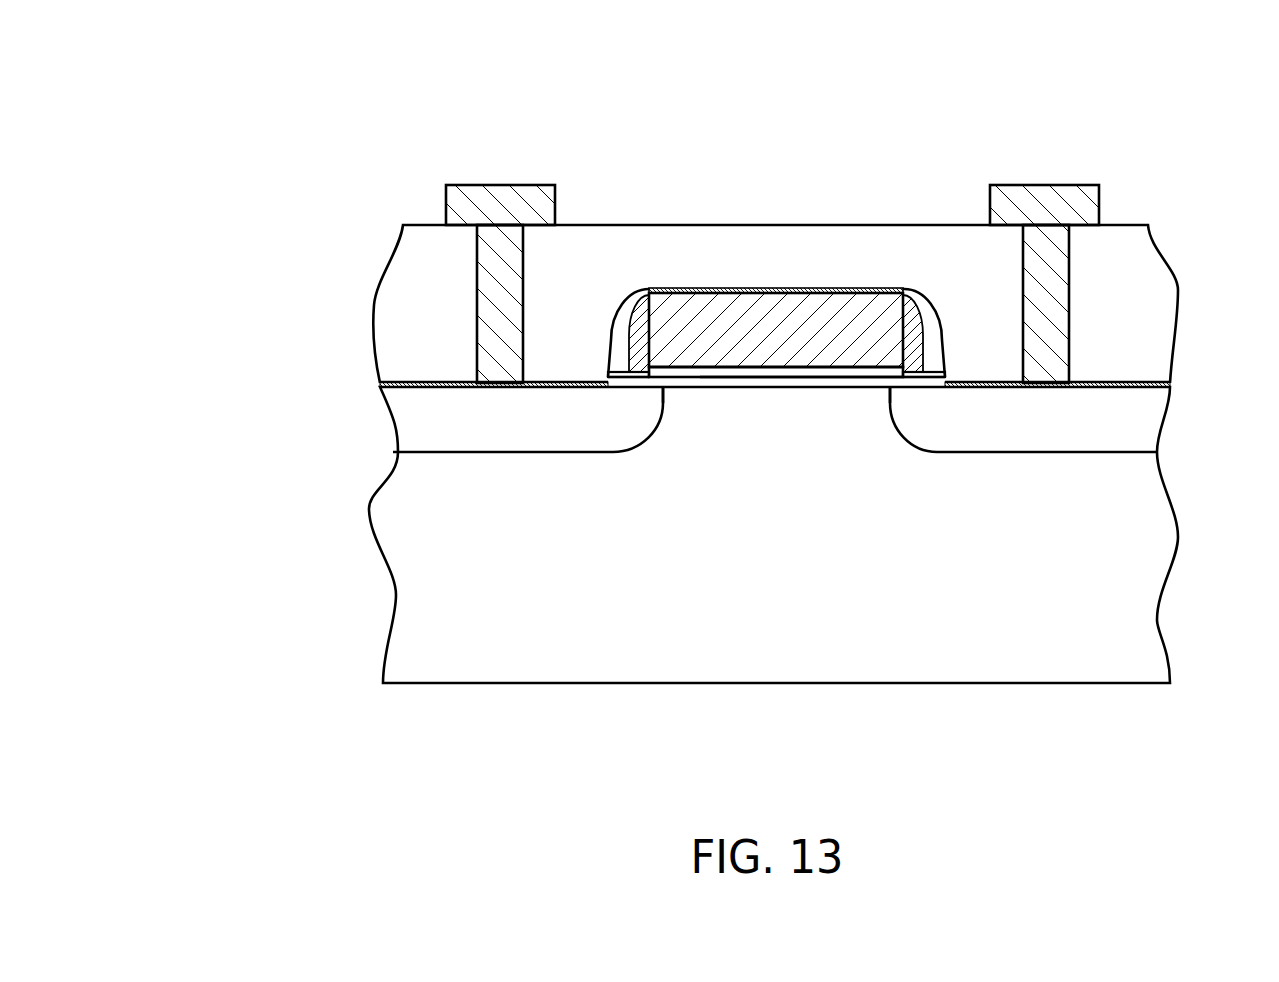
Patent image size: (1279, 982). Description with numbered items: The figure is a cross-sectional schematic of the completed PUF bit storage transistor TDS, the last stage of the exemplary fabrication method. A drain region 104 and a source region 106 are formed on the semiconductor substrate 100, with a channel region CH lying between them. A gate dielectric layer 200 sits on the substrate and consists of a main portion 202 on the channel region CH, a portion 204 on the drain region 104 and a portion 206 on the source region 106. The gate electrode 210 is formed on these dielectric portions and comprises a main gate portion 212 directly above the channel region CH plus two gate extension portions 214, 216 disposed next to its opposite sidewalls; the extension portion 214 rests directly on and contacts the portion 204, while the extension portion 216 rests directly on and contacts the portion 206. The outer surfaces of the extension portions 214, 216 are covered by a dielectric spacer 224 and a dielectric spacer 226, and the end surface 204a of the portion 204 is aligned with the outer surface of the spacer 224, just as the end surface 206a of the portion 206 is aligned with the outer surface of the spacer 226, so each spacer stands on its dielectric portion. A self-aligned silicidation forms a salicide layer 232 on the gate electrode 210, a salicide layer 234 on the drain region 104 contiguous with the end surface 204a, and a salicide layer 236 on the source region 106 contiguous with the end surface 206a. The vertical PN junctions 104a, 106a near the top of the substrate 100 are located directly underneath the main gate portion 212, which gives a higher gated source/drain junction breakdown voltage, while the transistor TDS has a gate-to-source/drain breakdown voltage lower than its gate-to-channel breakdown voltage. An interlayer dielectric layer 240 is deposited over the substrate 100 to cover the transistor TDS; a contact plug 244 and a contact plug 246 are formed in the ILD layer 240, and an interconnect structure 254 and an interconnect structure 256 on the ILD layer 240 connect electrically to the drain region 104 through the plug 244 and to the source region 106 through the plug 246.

The PUF bit storage transistor TDS is at (345, 135).
The semiconductor substrate 100 is at (757, 666).
The drain region 104 is at (488, 432).
The source region 106 is at (1022, 432).
The vertical PN junction 104a is at (666, 405).
The vertical PN junction 106a is at (887, 405).
The channel region CH is at (757, 437).
The gate dielectric layer 200 is at (868, 380).
The main portion 202 is at (687, 380).
The portion 204 is at (625, 383).
The portion 206 is at (928, 383).
The end surface 204a is at (604, 376).
The end surface 206a is at (950, 376).
The gate electrode 210 is at (635, 95).
The main gate portion 212 is at (848, 293).
The gate extension portion 214 is at (640, 295).
The gate extension portion 216 is at (921, 296).
The dielectric spacer 224 is at (620, 325).
The dielectric spacer 226 is at (932, 325).
The salicide layer 232 is at (765, 287).
The salicide layer 234 is at (410, 382).
The salicide layer 236 is at (1133, 381).
The interlayer dielectric layer 240 is at (1150, 287).
The contact plug 244 is at (503, 277).
The contact plug 246 is at (1050, 278).
The interconnect structure 254 is at (500, 190).
The interconnect structure 256 is at (1045, 190).